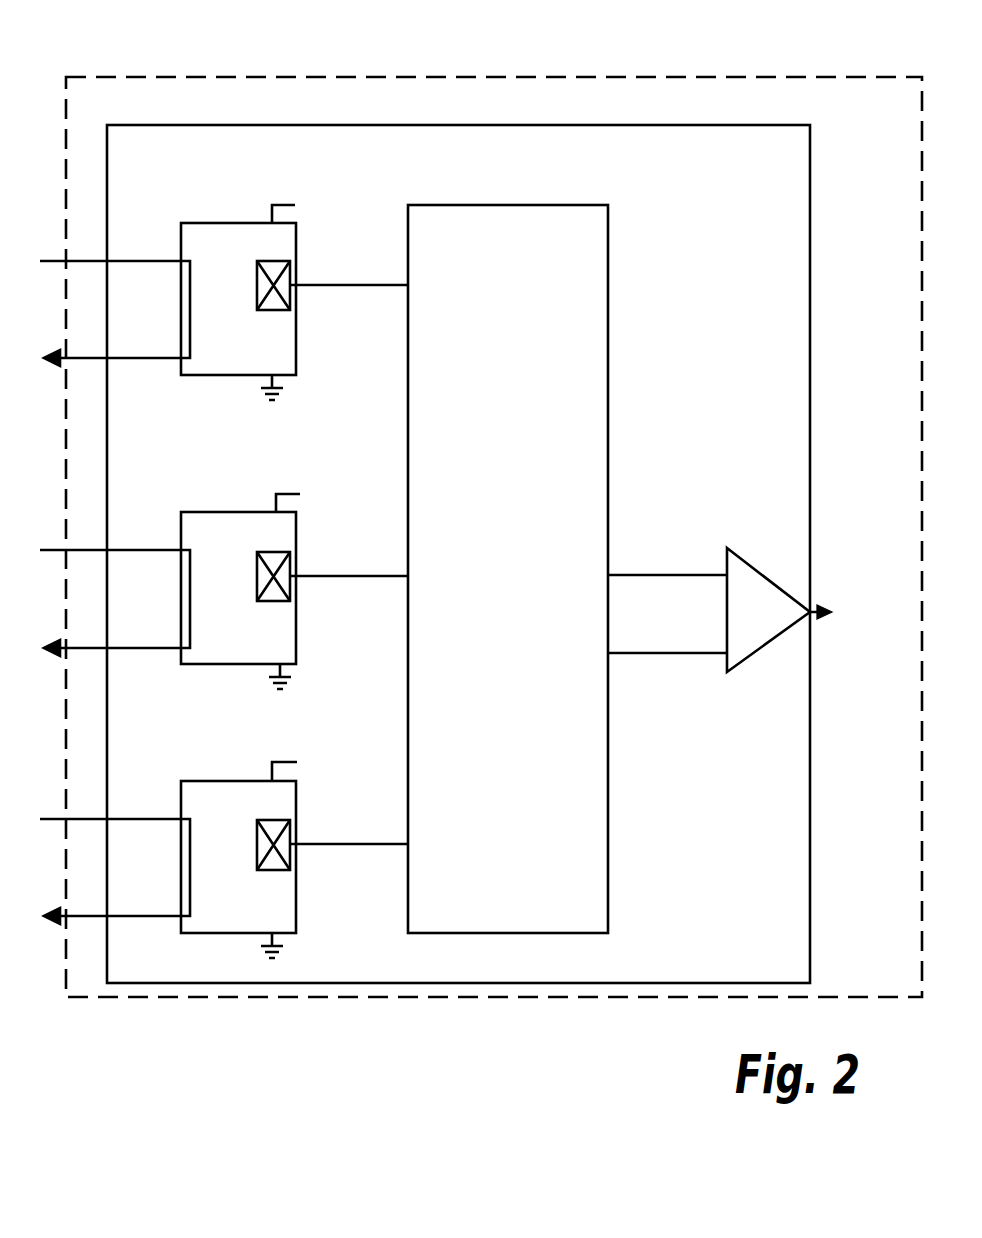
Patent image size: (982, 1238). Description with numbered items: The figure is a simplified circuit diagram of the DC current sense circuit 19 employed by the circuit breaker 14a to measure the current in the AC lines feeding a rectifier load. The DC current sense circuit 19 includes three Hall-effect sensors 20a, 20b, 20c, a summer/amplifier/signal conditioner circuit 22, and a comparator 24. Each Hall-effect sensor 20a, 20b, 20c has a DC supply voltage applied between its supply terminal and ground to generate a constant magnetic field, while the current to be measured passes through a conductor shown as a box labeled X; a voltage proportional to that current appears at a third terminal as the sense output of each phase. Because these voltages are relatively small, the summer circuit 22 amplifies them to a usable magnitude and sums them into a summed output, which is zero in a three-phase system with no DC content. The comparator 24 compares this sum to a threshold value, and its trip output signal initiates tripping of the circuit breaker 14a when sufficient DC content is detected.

The circuit breaker 14a is at (207, 77).
The DC current sense circuit 19 is at (810, 258).
The Hall-effect sensor 20a is at (233, 223).
The Hall-effect sensor 20b is at (232, 512).
The Hall-effect sensor 20c is at (228, 781).
The summer/amplifier/signal conditioner circuit 22 is at (608, 275).
The comparator 24 is at (757, 568).